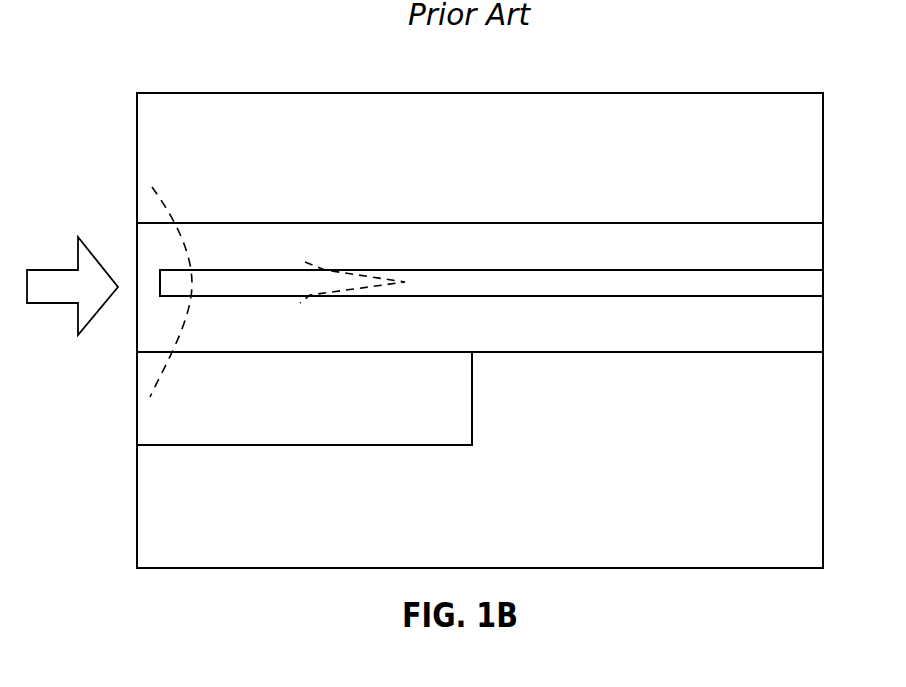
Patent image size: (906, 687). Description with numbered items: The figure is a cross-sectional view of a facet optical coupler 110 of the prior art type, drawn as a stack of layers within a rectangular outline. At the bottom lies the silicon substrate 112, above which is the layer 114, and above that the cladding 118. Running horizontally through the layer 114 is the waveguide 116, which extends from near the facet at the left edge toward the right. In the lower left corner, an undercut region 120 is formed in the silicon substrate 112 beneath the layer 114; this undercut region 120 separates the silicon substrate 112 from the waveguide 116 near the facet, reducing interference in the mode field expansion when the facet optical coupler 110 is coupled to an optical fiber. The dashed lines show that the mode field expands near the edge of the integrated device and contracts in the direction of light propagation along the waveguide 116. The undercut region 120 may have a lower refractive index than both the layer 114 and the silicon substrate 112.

The facet optical coupler 110 is at (716, 68).
The silicon substrate 112 is at (803, 469).
The layer 114 is at (798, 336).
The waveguide 116 is at (818, 284).
The cladding 118 is at (803, 197).
The undercut region 120 is at (196, 434).